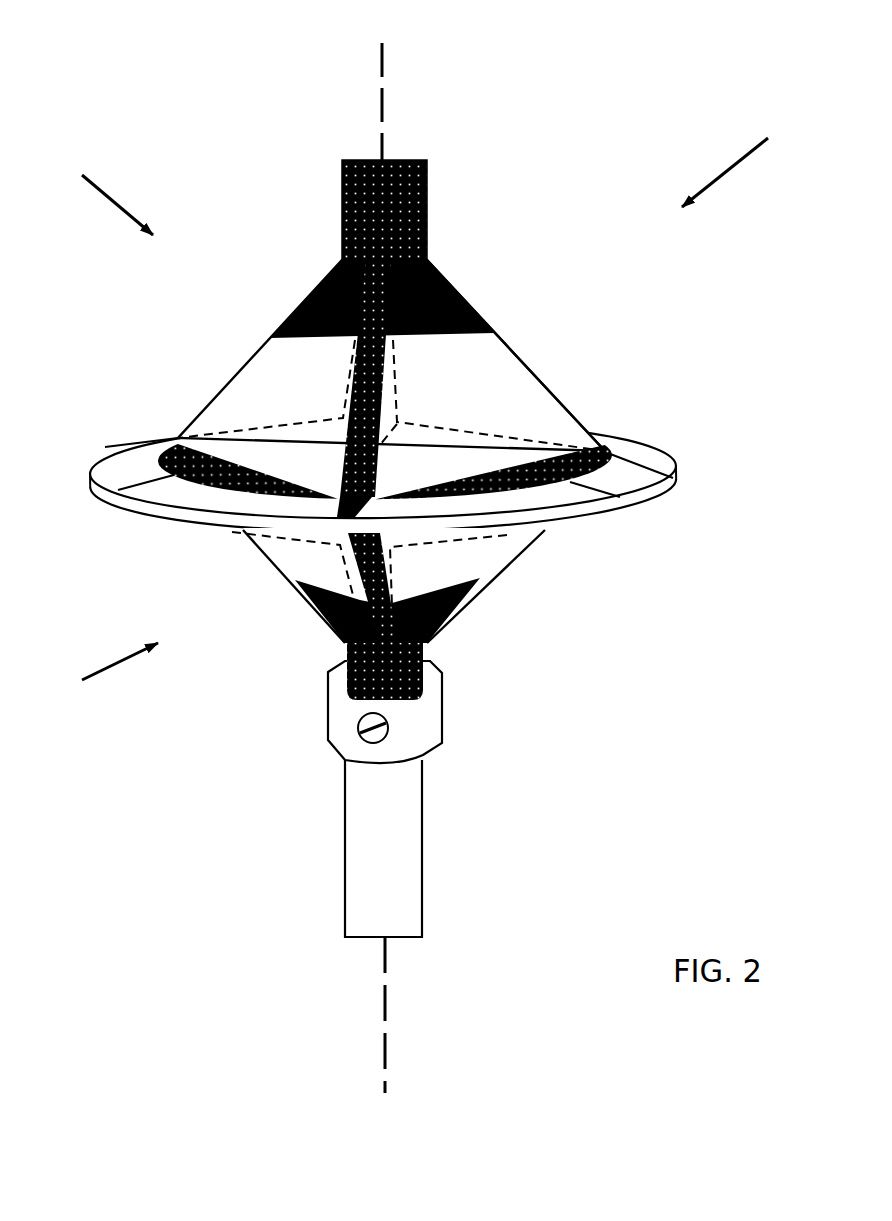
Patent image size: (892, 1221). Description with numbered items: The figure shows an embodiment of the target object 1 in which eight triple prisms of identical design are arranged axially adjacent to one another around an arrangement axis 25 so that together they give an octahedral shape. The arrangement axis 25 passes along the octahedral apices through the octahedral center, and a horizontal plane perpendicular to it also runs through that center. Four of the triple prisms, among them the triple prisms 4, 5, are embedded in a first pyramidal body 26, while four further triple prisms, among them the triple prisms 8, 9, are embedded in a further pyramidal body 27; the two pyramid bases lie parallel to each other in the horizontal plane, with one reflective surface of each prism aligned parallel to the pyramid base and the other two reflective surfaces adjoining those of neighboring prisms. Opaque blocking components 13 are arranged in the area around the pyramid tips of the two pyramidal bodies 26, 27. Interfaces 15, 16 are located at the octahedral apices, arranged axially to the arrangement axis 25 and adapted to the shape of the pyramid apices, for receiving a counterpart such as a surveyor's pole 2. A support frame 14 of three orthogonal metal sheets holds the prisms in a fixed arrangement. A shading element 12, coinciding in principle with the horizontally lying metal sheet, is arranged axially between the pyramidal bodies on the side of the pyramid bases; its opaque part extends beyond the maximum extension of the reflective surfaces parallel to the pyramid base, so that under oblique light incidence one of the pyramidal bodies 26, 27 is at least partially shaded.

The target object 1 is at (735, 163).
The surveyor's pole 2 is at (422, 823).
The triple prism 4 is at (230, 378).
The triple prism 5 is at (517, 358).
The triple prism 8 is at (303, 565).
The triple prism 9 is at (465, 570).
The shading element 12 is at (673, 478).
The blocking component 13 is at (325, 278).
The support frame 14 is at (390, 592).
The interface 15 is at (342, 208).
The interface 16 is at (325, 695).
The arrangement axis 25 is at (380, 551).
The first pyramidal body 26 is at (107, 192).
The further pyramidal body 27 is at (101, 667).